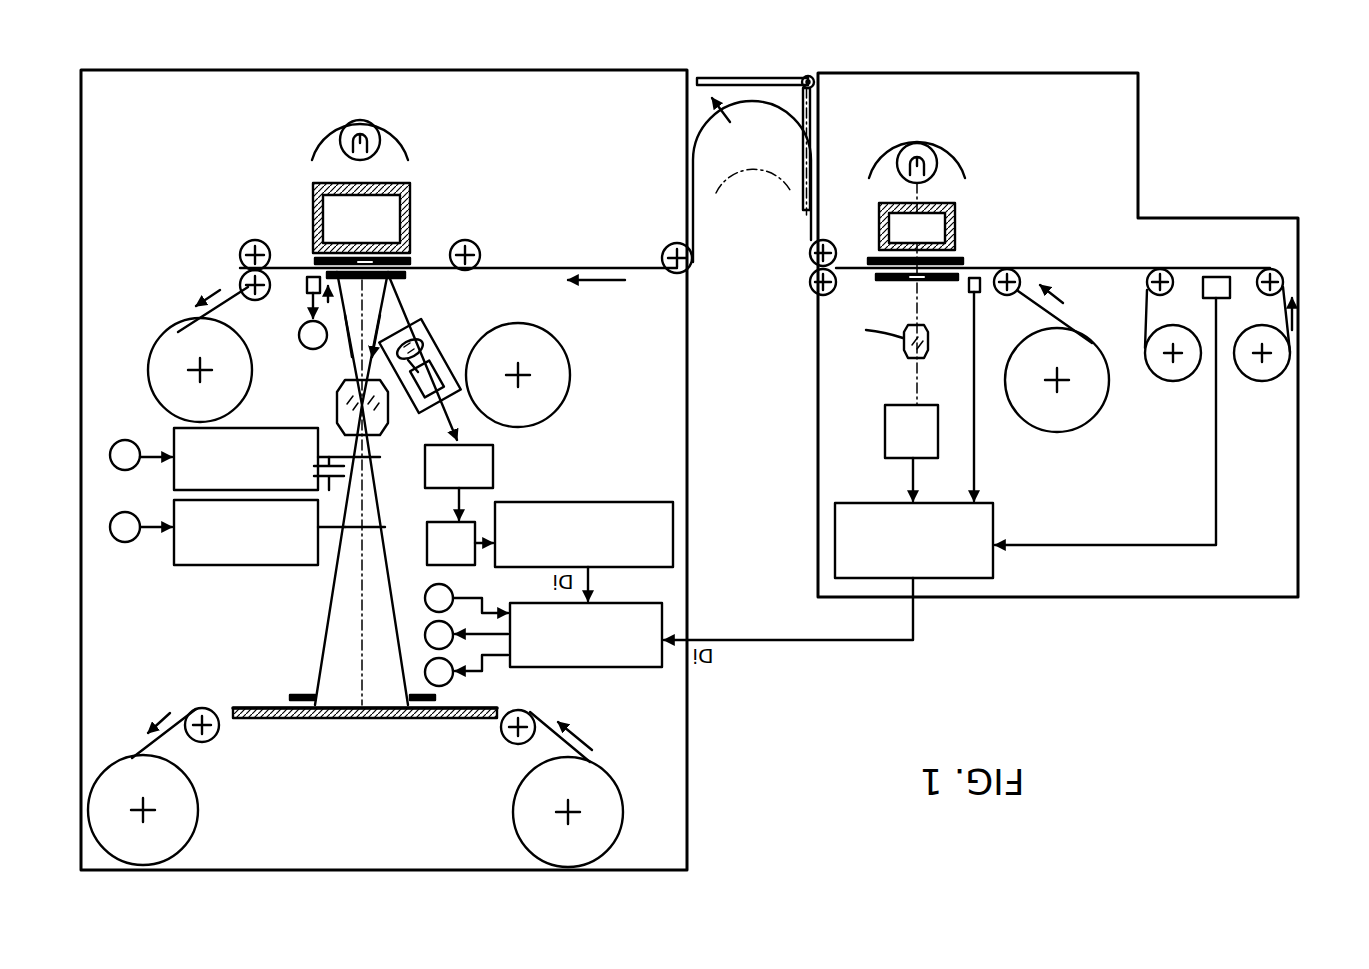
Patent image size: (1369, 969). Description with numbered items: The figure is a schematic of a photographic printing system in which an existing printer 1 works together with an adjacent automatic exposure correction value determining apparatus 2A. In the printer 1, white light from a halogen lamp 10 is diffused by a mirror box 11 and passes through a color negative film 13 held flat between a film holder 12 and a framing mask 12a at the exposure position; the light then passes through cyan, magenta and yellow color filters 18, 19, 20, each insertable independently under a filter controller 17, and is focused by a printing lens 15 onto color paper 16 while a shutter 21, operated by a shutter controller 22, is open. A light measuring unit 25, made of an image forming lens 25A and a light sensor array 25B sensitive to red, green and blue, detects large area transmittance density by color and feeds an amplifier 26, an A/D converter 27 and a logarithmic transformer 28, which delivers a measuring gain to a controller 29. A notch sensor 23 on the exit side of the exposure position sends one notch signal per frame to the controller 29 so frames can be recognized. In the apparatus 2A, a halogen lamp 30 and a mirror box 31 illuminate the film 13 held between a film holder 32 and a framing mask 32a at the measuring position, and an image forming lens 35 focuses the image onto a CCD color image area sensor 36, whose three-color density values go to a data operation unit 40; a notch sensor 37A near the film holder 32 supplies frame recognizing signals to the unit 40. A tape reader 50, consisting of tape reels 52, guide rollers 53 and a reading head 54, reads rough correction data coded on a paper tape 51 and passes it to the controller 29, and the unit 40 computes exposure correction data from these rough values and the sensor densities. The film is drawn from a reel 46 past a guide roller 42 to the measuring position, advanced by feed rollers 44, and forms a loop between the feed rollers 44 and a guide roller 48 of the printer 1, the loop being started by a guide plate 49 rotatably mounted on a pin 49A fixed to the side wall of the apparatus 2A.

The existing printer 1 is at (692, 797).
The automatic exposure correction value determining apparatus 2A is at (1100, 598).
The halogen lamp 10 is at (322, 137).
The mirror box 11 is at (312, 216).
The film holder 12 is at (413, 262).
The framing mask 12a is at (388, 278).
The color negative film 13 is at (430, 270).
The printing lens 15 is at (338, 402).
The color paper 16 is at (268, 706).
The filter controller 17 is at (172, 442).
The color filter 18 is at (376, 457).
The color filter 19 is at (322, 455).
The color filter 20 is at (333, 545).
The shutter 21 is at (386, 525).
The shutter controller 22 is at (242, 566).
The notch sensor 23 is at (305, 290).
The light measuring unit 25 is at (443, 353).
The image forming lens 25A is at (413, 334).
The light sensor array 25B is at (445, 352).
The amplifier 26 is at (494, 465).
The A/D converter 27 is at (477, 524).
The logarithmic transformer 28 is at (615, 502).
The controller 29 is at (603, 668).
The halogen lamp 30 is at (962, 160).
The mirror box 31 is at (956, 226).
The film holder 32 is at (964, 260).
The framing mask 32a is at (908, 284).
The image forming lens 35 is at (900, 352).
The color image area sensor 36 is at (884, 430).
The notch sensor 37A is at (970, 298).
The data operation unit 40 is at (868, 503).
The guide roller 42 is at (1005, 296).
The feed rollers 44 is at (830, 243).
The reel 46 is at (1090, 332).
The guide roller 48 is at (668, 245).
The guide plate 49 is at (718, 77).
The pin 49A is at (811, 78).
The tape reader 50 is at (1175, 387).
The paper tape 51 is at (1222, 270).
The tape reels 52 is at (1175, 383).
The guide rollers 53 is at (1148, 276).
The reading head 54 is at (1206, 275).